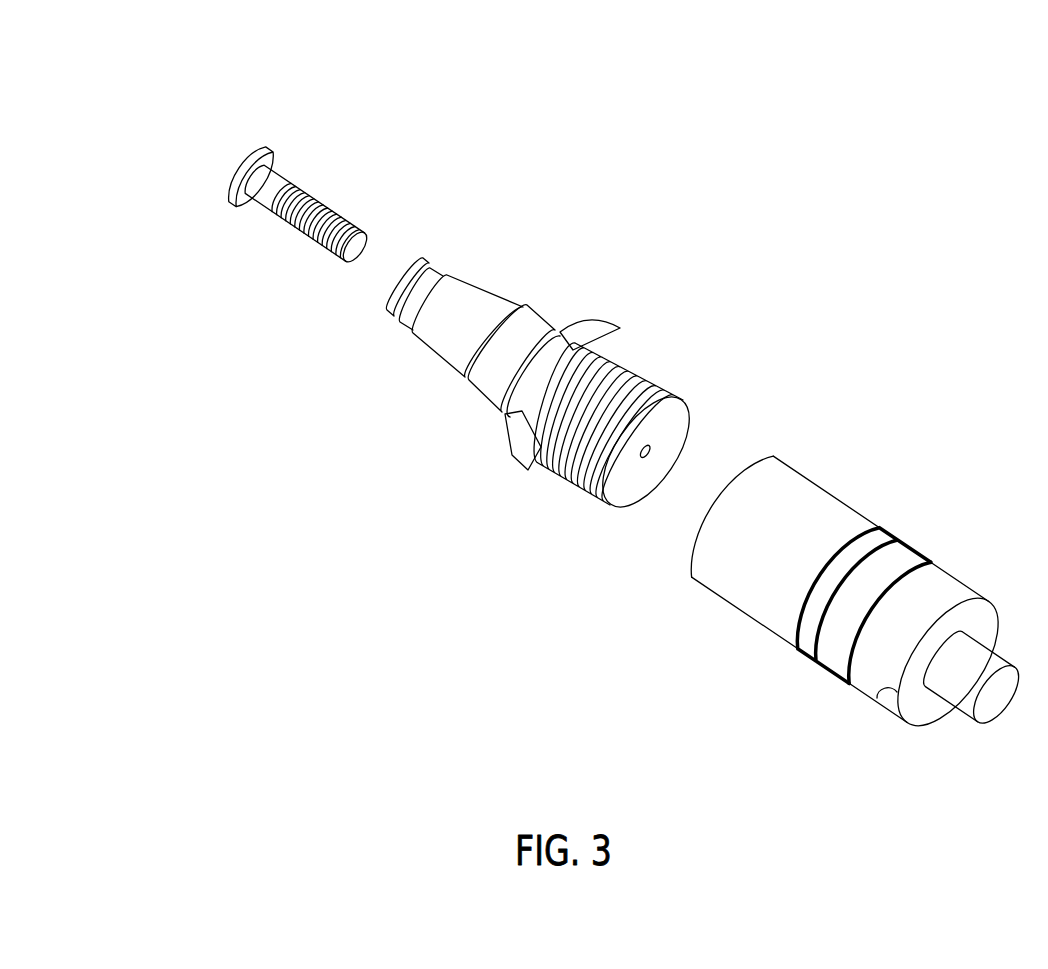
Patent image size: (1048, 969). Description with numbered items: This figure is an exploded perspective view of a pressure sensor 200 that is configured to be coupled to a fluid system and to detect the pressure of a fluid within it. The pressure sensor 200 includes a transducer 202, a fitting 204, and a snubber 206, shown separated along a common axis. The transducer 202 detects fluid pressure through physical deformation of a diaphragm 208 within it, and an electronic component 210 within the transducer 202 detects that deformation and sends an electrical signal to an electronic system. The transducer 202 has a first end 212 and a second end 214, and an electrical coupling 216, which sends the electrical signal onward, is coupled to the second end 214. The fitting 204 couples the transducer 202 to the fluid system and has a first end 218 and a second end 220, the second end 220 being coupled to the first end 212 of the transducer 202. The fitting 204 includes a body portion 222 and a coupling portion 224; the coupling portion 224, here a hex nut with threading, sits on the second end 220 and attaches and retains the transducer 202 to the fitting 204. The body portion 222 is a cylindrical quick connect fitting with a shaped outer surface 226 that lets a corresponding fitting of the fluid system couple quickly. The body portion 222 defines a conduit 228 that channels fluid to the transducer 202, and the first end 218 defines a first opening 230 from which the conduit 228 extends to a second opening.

The pressure sensor 200 is at (146, 78).
The transducer 202 is at (760, 627).
The fitting 204 is at (480, 407).
The snubber 206 is at (219, 166).
The diaphragm 208 is at (803, 657).
The electronic component 210 is at (830, 673).
The first end 212 is at (715, 592).
The second end 214 is at (883, 689).
The electrical coupling 216 is at (960, 720).
The first end 218 is at (410, 322).
The second end 220 is at (503, 440).
The body portion 222 is at (558, 302).
The coupling portion 224 is at (587, 333).
The shaped outer surface 226 is at (487, 291).
The conduit 228 is at (283, 235).
The first opening 230 is at (427, 288).